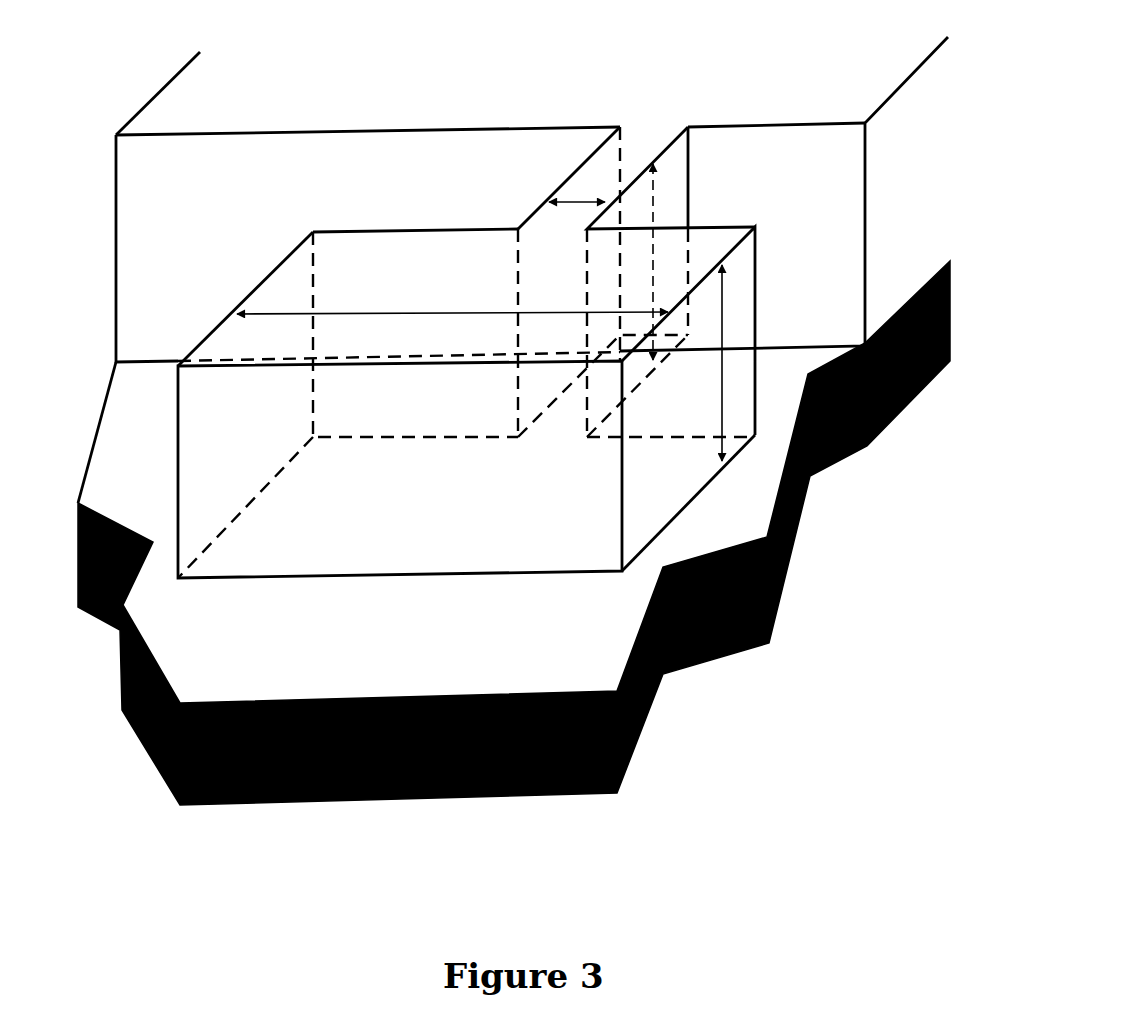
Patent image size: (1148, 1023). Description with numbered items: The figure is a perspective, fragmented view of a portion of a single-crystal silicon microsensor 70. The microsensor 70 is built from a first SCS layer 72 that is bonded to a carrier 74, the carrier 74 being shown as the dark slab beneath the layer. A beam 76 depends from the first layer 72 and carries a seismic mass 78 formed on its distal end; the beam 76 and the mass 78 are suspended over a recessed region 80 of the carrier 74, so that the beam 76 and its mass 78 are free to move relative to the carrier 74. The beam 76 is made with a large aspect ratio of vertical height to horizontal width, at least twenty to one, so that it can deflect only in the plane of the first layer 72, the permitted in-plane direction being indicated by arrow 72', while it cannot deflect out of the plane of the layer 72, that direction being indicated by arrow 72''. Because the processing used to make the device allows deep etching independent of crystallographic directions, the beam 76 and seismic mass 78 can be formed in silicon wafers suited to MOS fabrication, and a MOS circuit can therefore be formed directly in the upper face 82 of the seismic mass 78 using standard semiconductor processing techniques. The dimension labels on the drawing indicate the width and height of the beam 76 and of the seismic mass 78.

The SCS silicon microsensor 70 is at (360, 68).
The first SCS layer 72 is at (532, 199).
The arrow indicating in-plane deflection 72' is at (391, 178).
The arrow indicating out-of-plane direction 72'' is at (726, 218).
The carrier 74 is at (793, 561).
The beam 76 is at (563, 182).
The seismic mass 78 is at (252, 292).
The recessed region 80 is at (743, 515).
The upper face of the seismic mass 82 is at (338, 243).